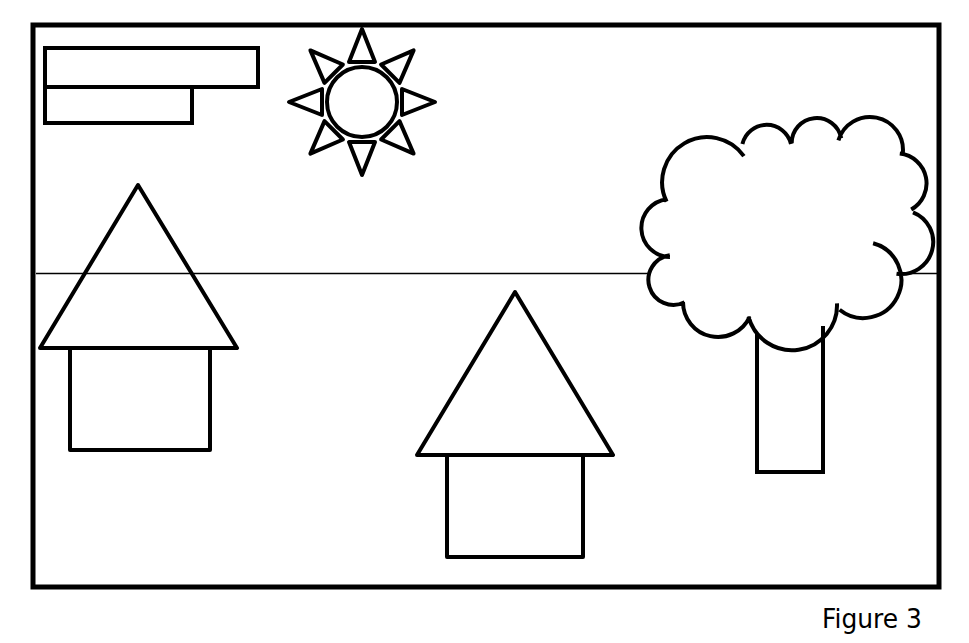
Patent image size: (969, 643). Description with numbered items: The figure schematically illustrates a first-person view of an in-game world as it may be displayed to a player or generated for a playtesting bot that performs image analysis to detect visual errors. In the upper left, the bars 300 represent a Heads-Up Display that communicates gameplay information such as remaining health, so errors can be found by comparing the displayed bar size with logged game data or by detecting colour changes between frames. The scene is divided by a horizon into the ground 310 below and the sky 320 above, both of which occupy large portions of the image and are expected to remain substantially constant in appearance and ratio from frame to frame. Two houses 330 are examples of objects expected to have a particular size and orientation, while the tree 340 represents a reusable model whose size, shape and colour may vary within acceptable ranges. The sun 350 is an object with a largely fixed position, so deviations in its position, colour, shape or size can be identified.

The bars 300 is at (150, 102).
The ground 310 is at (486, 414).
The sky 320 is at (545, 63).
The houses 330 is at (487, 482).
The tree 340 is at (787, 294).
The sun 350 is at (362, 102).